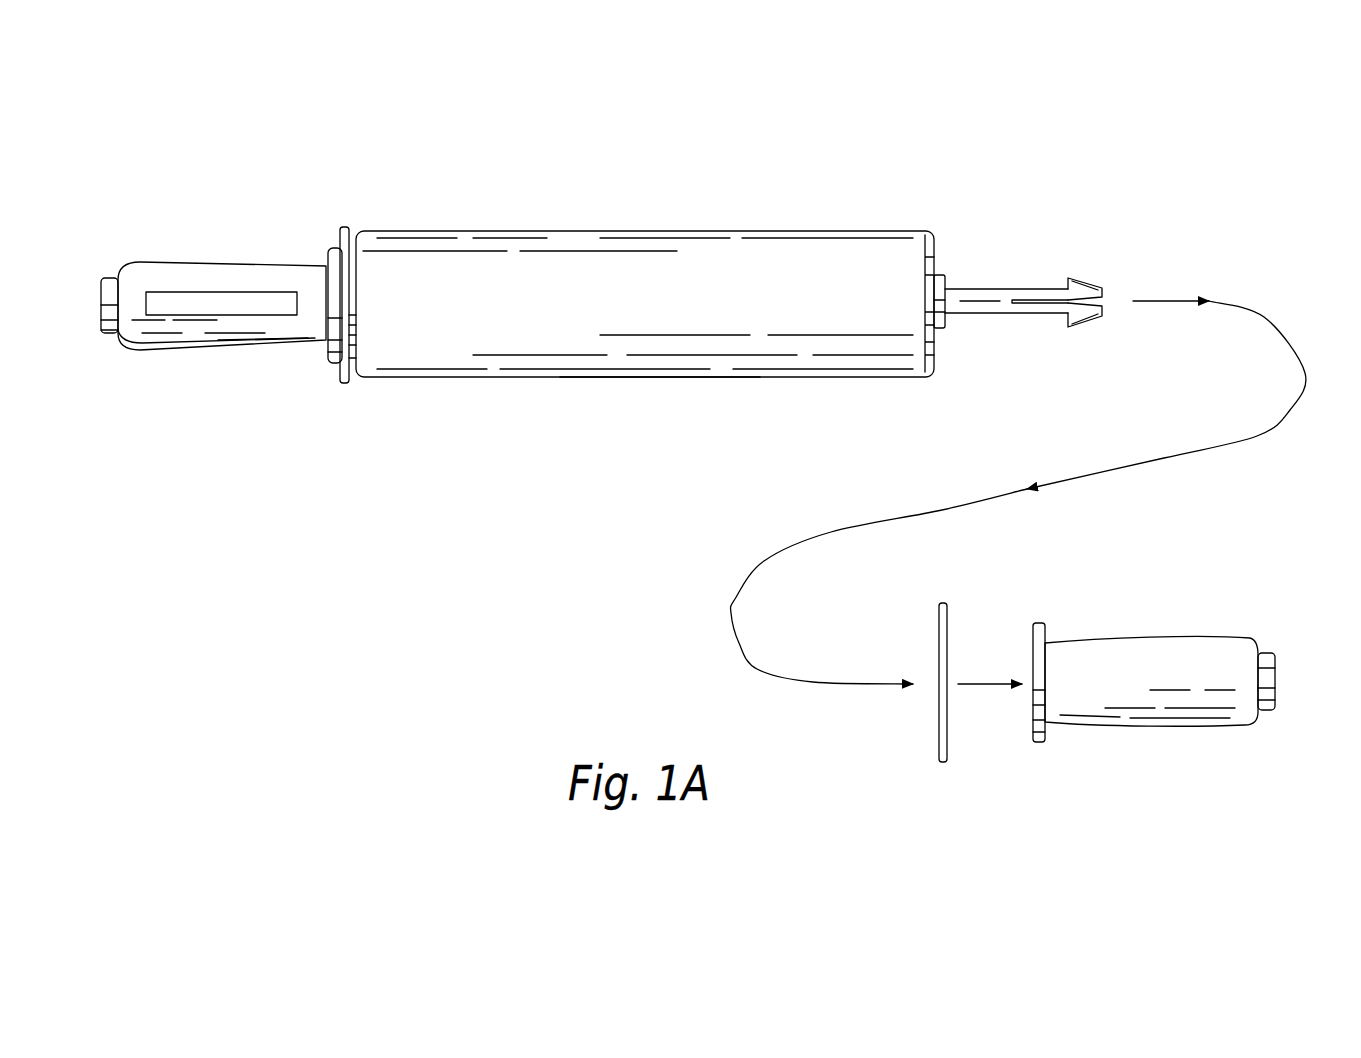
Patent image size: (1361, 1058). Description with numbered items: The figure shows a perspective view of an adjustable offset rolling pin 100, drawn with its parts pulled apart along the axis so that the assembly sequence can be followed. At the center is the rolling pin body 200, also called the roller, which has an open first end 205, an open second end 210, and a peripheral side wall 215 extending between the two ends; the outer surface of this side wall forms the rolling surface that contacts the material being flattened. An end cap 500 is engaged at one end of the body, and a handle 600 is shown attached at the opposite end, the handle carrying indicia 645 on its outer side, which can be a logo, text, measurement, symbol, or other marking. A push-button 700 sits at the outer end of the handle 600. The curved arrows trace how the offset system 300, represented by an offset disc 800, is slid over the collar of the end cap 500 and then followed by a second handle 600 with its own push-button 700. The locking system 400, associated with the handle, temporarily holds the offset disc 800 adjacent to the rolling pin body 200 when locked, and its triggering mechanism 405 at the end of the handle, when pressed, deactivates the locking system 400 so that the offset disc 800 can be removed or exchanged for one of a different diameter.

The adjustable offset rolling pin 100 is at (833, 176).
The rolling pin body 200 is at (497, 230).
The open first end 205 is at (337, 347).
The open second end 210 is at (933, 352).
The peripheral side wall 215 is at (650, 378).
The offset system 300 is at (897, 748).
The locking system 400 is at (1096, 248).
The triggering mechanism 405 is at (92, 270).
The end cap 500 is at (940, 255).
The handle 600 is at (208, 272).
The indicia 645 is at (192, 313).
The push-button 700 is at (102, 332).
The offset disc 800 is at (948, 624).